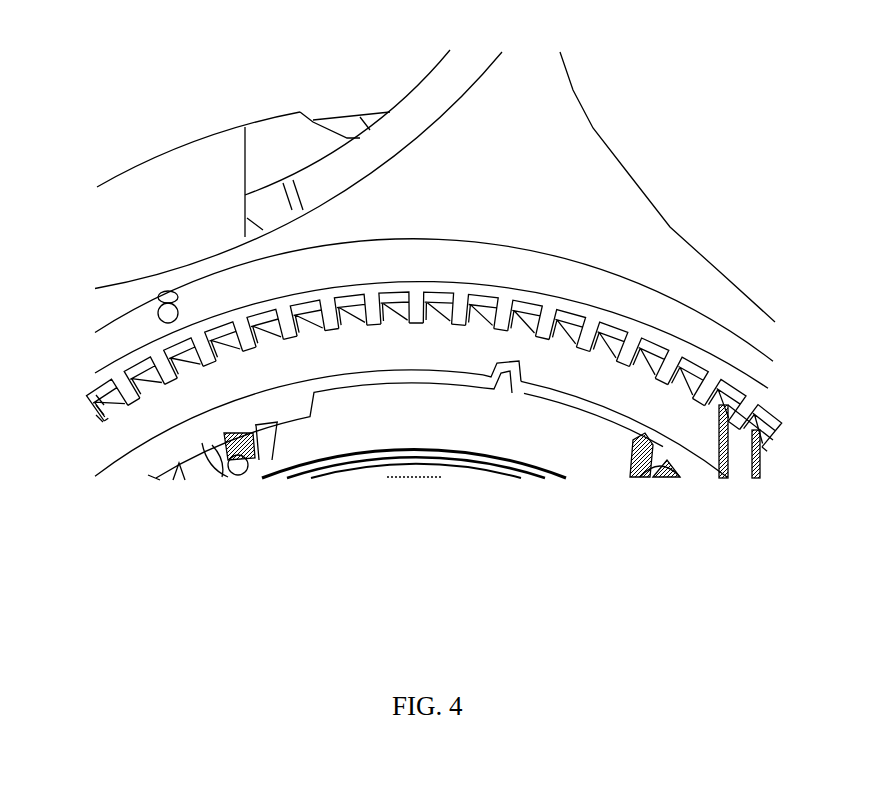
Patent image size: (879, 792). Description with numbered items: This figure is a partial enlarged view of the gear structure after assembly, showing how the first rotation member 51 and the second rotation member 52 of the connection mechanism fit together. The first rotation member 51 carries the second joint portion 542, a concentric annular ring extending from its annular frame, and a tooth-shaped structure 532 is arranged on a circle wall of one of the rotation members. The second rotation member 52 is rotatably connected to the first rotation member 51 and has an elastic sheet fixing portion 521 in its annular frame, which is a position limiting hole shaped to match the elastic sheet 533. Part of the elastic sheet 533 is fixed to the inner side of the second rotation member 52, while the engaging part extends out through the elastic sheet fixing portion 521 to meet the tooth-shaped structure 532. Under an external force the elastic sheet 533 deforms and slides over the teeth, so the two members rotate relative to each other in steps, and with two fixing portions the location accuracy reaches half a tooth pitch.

The first rotation member 51 is at (210, 167).
The second rotation member 52 is at (135, 438).
The elastic sheet fixing portion 521 is at (373, 328).
The tooth-shaped structure 532 is at (750, 397).
The elastic sheet 533 is at (605, 340).
The second joint portion 542 is at (140, 330).